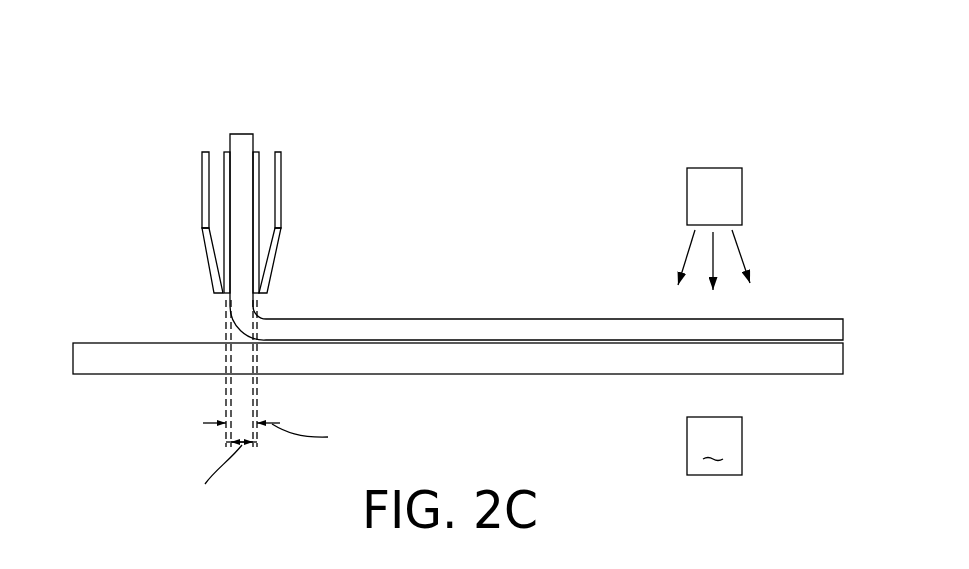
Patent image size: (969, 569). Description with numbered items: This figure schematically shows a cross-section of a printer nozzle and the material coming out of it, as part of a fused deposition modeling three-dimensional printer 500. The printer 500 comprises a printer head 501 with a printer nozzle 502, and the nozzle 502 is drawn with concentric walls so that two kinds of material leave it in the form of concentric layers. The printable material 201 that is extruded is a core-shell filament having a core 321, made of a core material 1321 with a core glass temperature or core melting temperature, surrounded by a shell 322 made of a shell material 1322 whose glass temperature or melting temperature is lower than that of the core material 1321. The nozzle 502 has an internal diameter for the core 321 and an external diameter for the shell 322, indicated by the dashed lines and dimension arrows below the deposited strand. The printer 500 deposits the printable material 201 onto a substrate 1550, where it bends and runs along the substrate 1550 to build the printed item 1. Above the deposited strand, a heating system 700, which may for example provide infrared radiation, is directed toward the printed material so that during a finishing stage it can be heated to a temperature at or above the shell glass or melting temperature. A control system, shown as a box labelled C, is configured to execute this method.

The 3D item 1 is at (532, 184).
The 3D printable material 201 is at (265, 188).
The core 321 is at (532, 184).
The core material 1321 is at (242, 134).
The shell 322 is at (329, 212).
The shell material 1322 is at (329, 212).
The fused deposition modeling 3D printer 500 is at (623, 98).
The printer head 501 is at (188, 220).
The printer nozzle 502 is at (198, 250).
The heating system 700 is at (726, 148).
The substrate 1550 is at (218, 378).